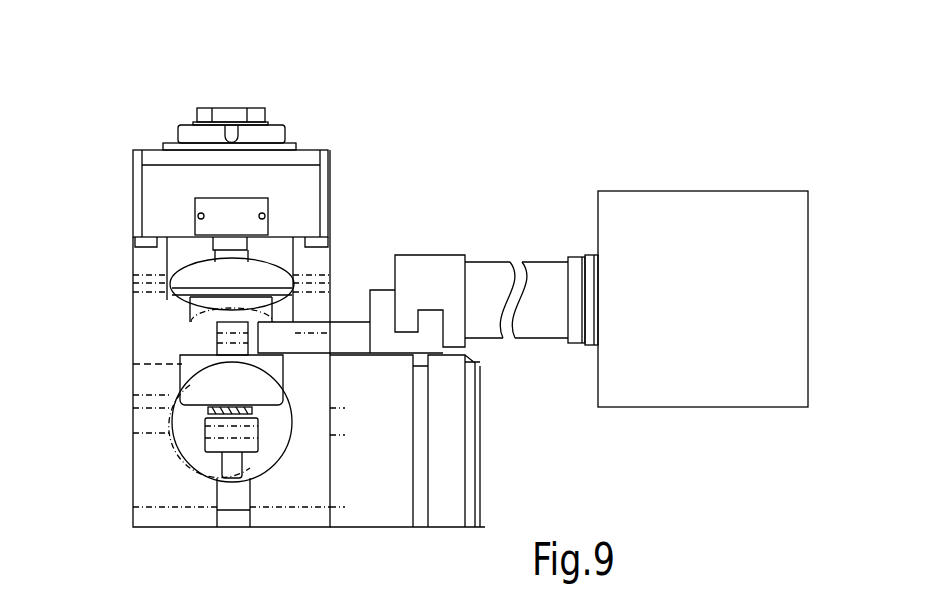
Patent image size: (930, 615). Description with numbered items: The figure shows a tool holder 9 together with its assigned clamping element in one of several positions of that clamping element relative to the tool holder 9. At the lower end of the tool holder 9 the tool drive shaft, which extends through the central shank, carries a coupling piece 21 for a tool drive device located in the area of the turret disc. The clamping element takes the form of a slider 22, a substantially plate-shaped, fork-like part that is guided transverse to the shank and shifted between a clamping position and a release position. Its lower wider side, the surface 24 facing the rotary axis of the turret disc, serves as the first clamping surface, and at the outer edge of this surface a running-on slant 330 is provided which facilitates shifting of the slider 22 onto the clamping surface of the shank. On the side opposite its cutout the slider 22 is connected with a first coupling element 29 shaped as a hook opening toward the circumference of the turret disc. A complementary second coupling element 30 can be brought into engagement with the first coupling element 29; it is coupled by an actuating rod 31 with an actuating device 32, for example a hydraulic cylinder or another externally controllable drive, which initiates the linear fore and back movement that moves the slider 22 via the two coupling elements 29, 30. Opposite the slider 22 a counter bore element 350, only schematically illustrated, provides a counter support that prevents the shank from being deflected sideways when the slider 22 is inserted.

The tool holder 9 is at (300, 137).
The coupling piece 21 is at (228, 442).
The slider 22 is at (352, 333).
The lower surface 24 is at (331, 353).
The first coupling element 29 is at (381, 297).
The second coupling element 30 is at (435, 287).
The actuating rod 31 is at (540, 272).
The actuating device 32 is at (682, 245).
The running-on slant 330 is at (266, 348).
The counter bore element 350 is at (152, 383).